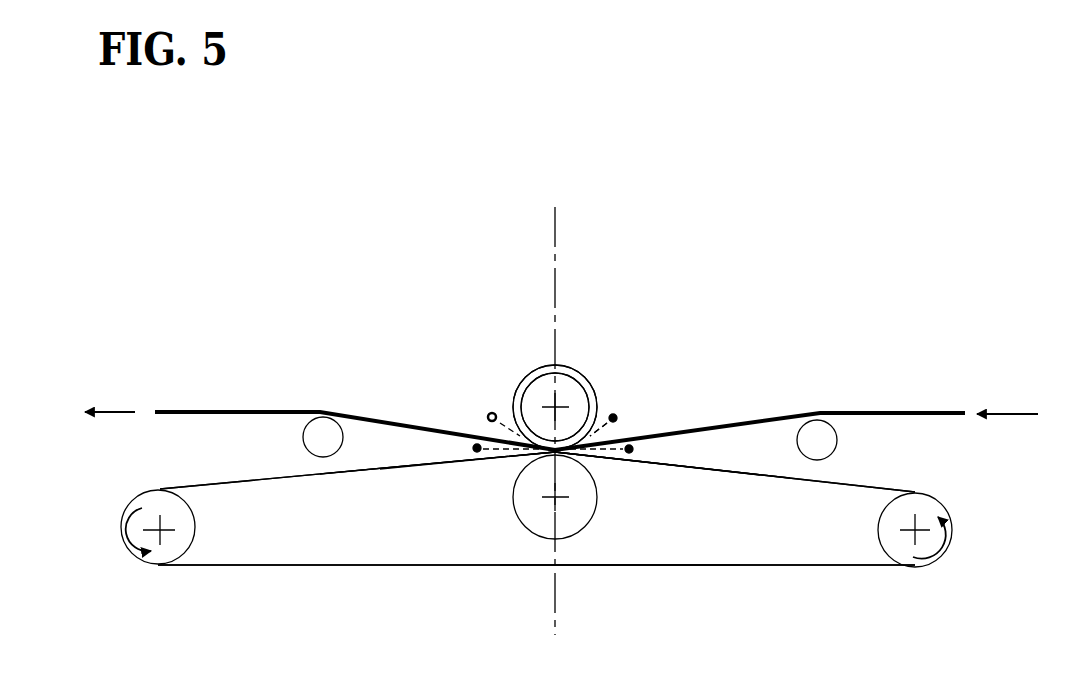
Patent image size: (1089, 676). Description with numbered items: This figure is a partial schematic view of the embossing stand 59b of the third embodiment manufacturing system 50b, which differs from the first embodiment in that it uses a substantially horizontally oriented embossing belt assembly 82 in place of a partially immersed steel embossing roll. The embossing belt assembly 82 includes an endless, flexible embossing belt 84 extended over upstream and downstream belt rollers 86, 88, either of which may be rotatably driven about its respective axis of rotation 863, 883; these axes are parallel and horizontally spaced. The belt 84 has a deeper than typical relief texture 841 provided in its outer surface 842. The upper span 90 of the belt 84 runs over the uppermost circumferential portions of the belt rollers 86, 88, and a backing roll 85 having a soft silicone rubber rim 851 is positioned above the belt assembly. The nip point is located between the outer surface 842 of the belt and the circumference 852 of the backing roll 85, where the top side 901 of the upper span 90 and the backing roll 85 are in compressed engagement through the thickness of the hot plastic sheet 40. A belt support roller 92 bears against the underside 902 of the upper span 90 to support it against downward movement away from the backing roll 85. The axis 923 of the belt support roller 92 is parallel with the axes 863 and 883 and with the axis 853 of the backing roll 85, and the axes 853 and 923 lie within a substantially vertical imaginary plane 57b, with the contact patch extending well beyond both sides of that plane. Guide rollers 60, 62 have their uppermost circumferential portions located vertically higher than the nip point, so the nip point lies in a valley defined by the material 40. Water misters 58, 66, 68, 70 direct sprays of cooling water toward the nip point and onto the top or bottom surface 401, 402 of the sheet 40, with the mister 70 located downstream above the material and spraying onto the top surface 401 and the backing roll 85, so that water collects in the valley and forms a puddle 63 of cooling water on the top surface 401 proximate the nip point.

The hot plastic sheet 40 is at (222, 398).
The top surface of the hot plastic sheet 401 is at (887, 408).
The bottom surface of the hot plastic sheet 402 is at (178, 420).
The third embodiment manufacturing system 50b is at (880, 208).
The substantially vertical imaginary plane 57b is at (557, 233).
The water mister 58 is at (628, 409).
The embossing stand 59b is at (313, 253).
The guide roller 60 is at (840, 441).
The guide roller 62 is at (293, 442).
The cooling water puddle 63 is at (630, 425).
The water mister 66 is at (645, 448).
The water mister 68 is at (458, 449).
The water mister 70 is at (484, 412).
The embossing belt assembly 82 is at (313, 588).
The endless flexible embossing belt 84 is at (740, 572).
The relief texture 841 is at (612, 572).
The outer surface of the belt 842 is at (696, 607).
The backing roll 85 is at (569, 360).
The soft silicone rubber rim 851 is at (582, 377).
The circumference of the backing roll 852 is at (598, 382).
The axis of rotation of the backing roll 853 is at (554, 405).
The belt roller 86 is at (950, 532).
The axis of rotation of belt roller 863 is at (915, 530).
The belt roller 88 is at (133, 558).
The axis of rotation of belt roller 883 is at (172, 530).
The upper span of the belt 90 is at (249, 484).
The top side of the belt upper span 901 is at (348, 464).
The underside of the belt upper span 902 is at (404, 470).
The belt support roller 92 is at (600, 500).
The axis of rotation of the belt support roller 923 is at (553, 500).